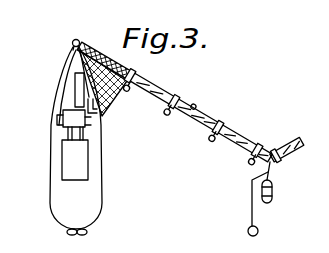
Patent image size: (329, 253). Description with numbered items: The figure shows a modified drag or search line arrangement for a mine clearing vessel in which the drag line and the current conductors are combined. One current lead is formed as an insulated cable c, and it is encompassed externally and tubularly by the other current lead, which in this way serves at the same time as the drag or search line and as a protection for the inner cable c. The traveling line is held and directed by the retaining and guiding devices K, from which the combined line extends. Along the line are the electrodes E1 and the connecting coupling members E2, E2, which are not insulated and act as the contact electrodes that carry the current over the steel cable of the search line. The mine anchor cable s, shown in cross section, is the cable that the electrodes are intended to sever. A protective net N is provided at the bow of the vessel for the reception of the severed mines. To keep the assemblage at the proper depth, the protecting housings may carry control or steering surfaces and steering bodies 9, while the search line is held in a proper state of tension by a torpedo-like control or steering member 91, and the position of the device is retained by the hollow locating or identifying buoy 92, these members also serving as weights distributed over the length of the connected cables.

The retaining and guiding devices K is at (72, 43).
The insulated cable current lead c is at (60, 97).
The protective net N is at (106, 97).
The electrode E1 is at (163, 79).
The connecting coupling member electrode E2 is at (217, 112).
The mine anchor cable s is at (196, 107).
The steering body 9 is at (167, 115).
The torpedo-like control or steering member 91 is at (273, 186).
The buoy 92 is at (259, 231).